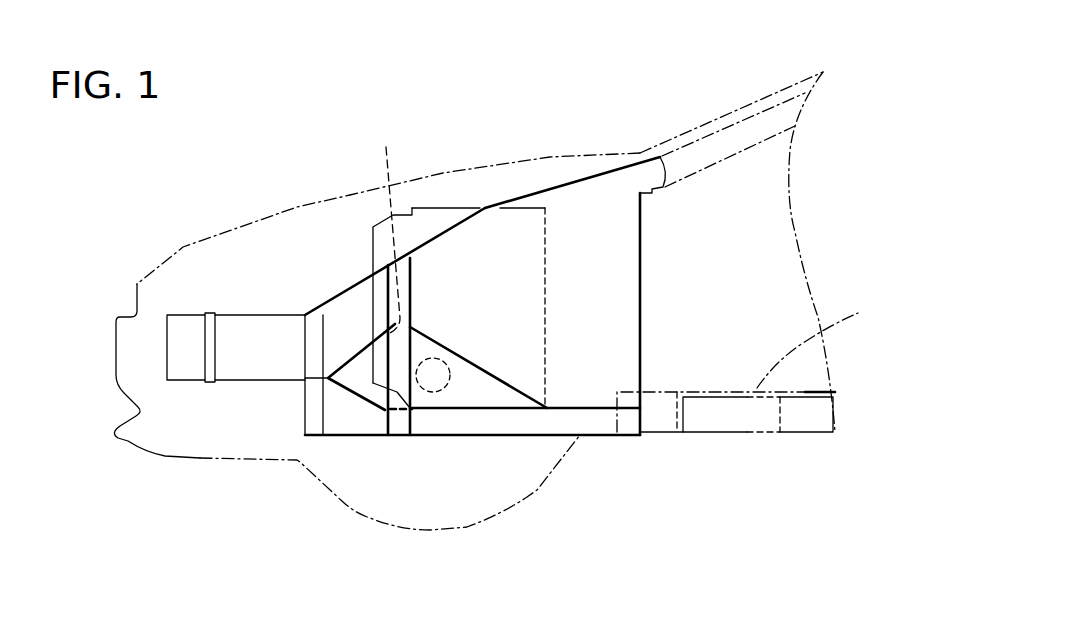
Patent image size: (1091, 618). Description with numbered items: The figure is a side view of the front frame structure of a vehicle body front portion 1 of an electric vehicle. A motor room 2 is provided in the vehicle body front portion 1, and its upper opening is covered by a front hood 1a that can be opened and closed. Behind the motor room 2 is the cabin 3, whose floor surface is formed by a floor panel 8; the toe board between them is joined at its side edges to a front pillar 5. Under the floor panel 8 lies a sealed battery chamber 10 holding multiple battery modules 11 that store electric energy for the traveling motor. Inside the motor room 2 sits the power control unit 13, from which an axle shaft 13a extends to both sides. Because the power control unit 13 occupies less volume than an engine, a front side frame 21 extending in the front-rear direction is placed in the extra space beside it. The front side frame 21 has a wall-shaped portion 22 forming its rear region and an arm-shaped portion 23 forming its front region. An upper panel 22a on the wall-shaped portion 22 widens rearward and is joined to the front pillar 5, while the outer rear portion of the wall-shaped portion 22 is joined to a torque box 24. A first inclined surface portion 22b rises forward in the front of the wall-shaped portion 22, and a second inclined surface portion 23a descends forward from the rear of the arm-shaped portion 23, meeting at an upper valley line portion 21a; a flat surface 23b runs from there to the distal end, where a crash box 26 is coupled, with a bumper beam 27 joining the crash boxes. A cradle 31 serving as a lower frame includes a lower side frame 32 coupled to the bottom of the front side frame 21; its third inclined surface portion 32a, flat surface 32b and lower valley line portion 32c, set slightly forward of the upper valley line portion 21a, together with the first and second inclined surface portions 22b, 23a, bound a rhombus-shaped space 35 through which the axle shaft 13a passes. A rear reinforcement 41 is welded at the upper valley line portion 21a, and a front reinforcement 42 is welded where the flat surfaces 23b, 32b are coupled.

The vehicle body front portion 1 is at (621, 76).
The front hood 1a is at (442, 173).
The motor room 2 is at (313, 277).
The cabin 3 is at (750, 280).
The front pillar 5 is at (750, 122).
The floor panel 8 is at (818, 344).
The battery chamber 10 is at (818, 386).
The battery module 11 is at (724, 427).
The power control unit 13 is at (485, 200).
The axle shaft 13a is at (450, 388).
The front side frame 21 is at (652, 299).
The upper valley line portion 21a is at (387, 226).
The wall-shaped portion 22 is at (623, 247).
The upper panel 22a is at (595, 176).
The first inclined surface portion 22b is at (478, 367).
The arm-shaped portion 23 is at (353, 310).
The second inclined surface portion 23a is at (352, 345).
The flat surface 23b is at (313, 373).
The torque box 24 is at (662, 427).
The crash box 26 is at (249, 370).
The bumper beam 27 is at (186, 370).
The cradle 31 is at (606, 455).
The lower side frame 32 is at (514, 430).
The third inclined surface portion 32a is at (358, 375).
The flat surface 32b is at (316, 378).
The lower valley line portion 32c is at (358, 400).
The rhombus-shaped space 35 is at (420, 360).
The rear reinforcement 41 is at (418, 268).
The front reinforcement 42 is at (290, 435).